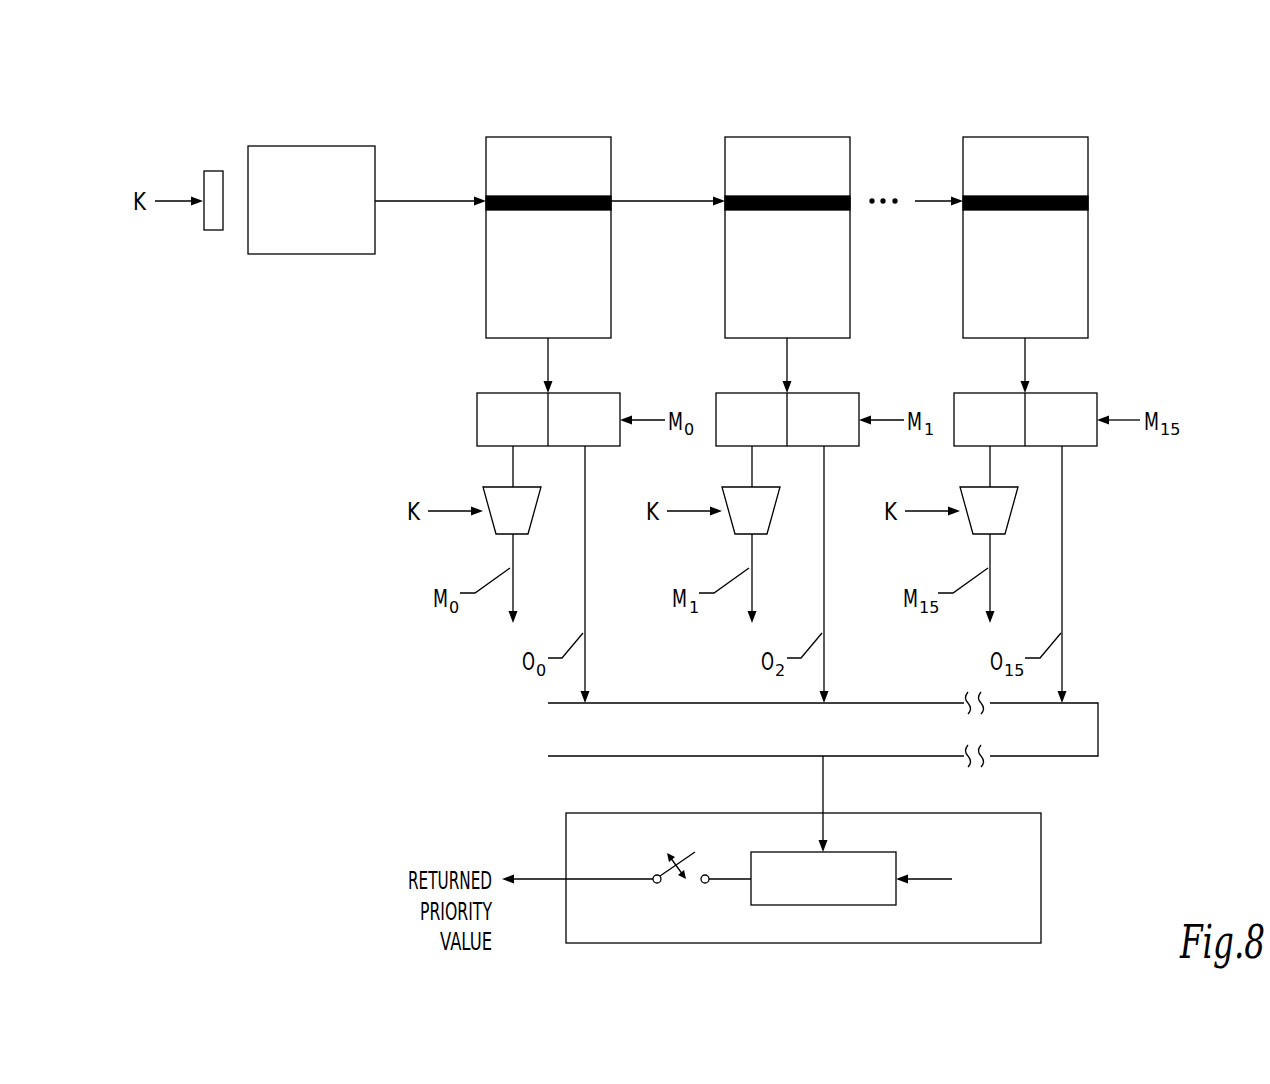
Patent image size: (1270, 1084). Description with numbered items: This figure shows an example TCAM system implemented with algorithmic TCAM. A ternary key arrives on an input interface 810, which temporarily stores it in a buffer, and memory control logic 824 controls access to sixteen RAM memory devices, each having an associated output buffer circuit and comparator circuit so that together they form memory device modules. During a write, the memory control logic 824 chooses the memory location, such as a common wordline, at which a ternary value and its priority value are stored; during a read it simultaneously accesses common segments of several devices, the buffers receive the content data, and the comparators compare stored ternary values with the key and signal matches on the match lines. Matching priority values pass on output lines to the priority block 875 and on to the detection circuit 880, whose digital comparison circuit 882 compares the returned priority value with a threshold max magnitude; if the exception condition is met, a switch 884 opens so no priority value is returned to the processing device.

The input interface 810 is at (215, 170).
The memory control logic 824 is at (310, 146).
The priority block 875 is at (547, 722).
The detection circuit 880 is at (567, 832).
The digital comparison circuit 882 is at (868, 852).
The switch 884 is at (693, 853).